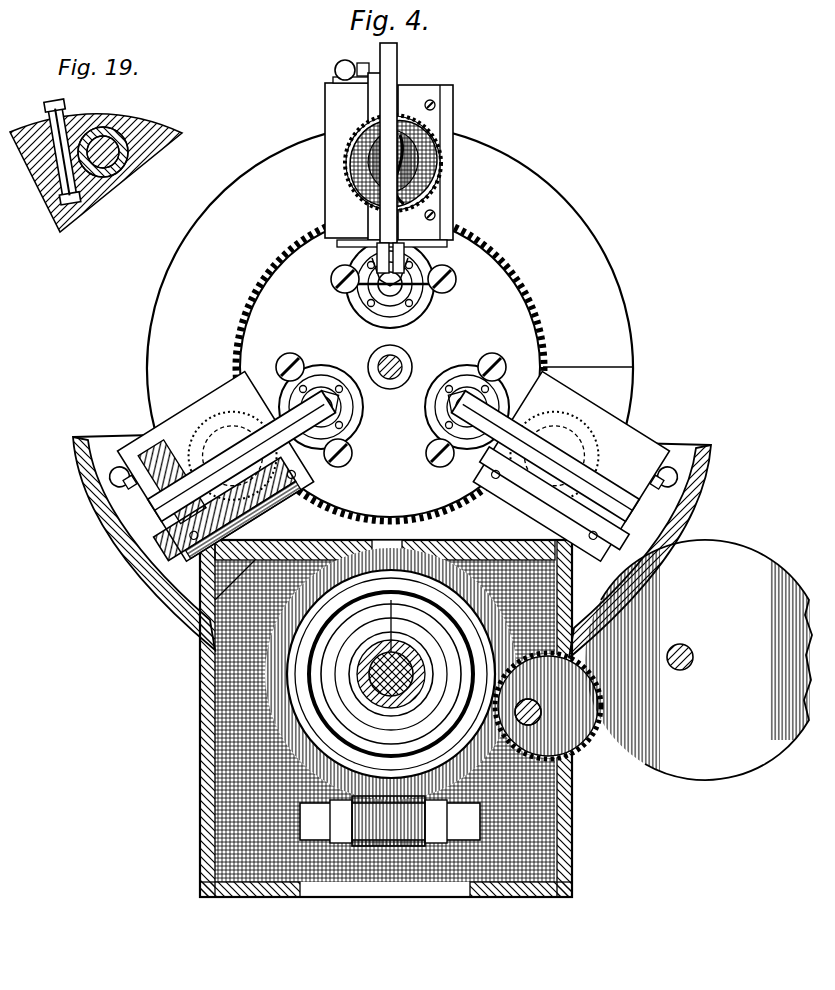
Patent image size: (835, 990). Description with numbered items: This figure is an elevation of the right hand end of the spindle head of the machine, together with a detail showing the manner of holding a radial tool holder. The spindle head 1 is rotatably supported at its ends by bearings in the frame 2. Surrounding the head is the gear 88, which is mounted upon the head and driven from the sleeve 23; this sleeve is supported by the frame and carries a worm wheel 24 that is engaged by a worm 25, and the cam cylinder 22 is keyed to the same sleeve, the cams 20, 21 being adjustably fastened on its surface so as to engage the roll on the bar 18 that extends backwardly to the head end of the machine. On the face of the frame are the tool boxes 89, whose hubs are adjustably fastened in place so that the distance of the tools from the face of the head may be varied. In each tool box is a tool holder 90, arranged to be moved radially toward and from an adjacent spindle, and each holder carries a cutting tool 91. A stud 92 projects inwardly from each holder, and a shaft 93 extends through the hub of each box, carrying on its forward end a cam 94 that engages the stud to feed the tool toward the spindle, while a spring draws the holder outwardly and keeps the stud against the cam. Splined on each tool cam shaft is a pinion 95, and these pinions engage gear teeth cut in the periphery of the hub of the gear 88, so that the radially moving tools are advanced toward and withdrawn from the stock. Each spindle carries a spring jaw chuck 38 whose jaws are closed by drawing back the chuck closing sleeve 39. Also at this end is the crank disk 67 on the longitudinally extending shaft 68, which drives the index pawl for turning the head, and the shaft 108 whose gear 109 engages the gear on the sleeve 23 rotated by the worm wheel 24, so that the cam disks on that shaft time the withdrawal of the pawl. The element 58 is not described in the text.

In FIG. 4, the spindle head 1 is at (484, 312).
In FIG. 19, the spindle head 1 is at (145, 168).
In FIG. 4, the frame 2 is at (390, 277).
In FIG. 4, the bar 18 is at (390, 538).
In FIG. 4, the cam 20 is at (322, 732).
In FIG. 4, the cam 21 is at (428, 635).
In FIG. 4, the cam cylinder 22 is at (300, 660).
In FIG. 4, the sleeve 23 is at (395, 715).
In FIG. 4, the worm wheel 24 is at (262, 698).
In FIG. 4, the worm 25 is at (390, 880).
In FIG. 4, the spring jaw chuck 38 is at (383, 291).
In FIG. 4, the chuck closing sleeve 39 is at (415, 312).
In FIG. 4, the hub collar 58 is at (390, 620).
In FIG. 4, the crank disk 67 is at (698, 660).
In FIG. 4, the shaft 68 is at (680, 646).
In FIG. 4, the gear 88 is at (500, 272).
In FIG. 4, the tool boxes 89 is at (333, 90).
In FIG. 19, the tool boxes 89 is at (125, 120).
In FIG. 4, the tool holder 90 is at (372, 106).
In FIG. 4, the cutting tool 91 is at (360, 298).
In FIG. 4, the stud 92 is at (440, 212).
In FIG. 4, the shaft 93 is at (405, 158).
In FIG. 19, the shaft 93 is at (112, 180).
In FIG. 4, the cam 94 is at (345, 190).
In FIG. 4, the pinion 95 is at (452, 168).
In FIG. 4, the shaft 108 is at (575, 788).
In FIG. 4, the gear 109 is at (600, 760).